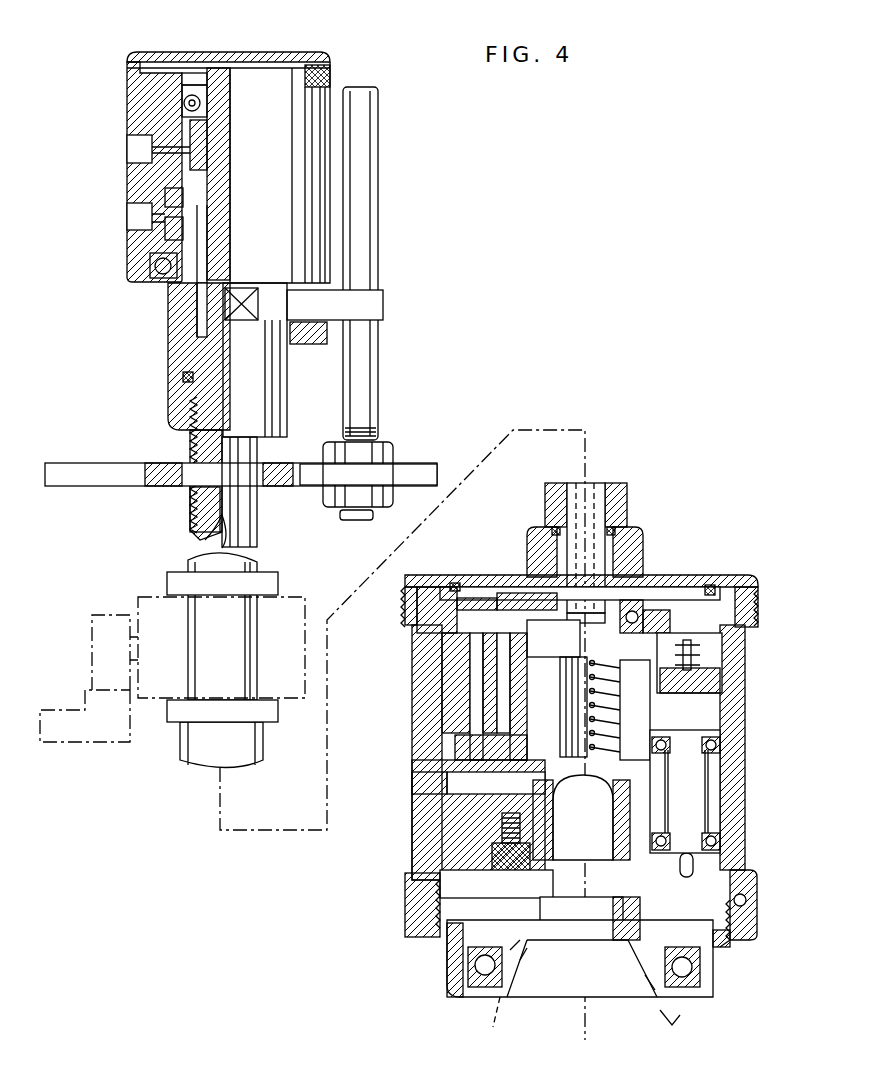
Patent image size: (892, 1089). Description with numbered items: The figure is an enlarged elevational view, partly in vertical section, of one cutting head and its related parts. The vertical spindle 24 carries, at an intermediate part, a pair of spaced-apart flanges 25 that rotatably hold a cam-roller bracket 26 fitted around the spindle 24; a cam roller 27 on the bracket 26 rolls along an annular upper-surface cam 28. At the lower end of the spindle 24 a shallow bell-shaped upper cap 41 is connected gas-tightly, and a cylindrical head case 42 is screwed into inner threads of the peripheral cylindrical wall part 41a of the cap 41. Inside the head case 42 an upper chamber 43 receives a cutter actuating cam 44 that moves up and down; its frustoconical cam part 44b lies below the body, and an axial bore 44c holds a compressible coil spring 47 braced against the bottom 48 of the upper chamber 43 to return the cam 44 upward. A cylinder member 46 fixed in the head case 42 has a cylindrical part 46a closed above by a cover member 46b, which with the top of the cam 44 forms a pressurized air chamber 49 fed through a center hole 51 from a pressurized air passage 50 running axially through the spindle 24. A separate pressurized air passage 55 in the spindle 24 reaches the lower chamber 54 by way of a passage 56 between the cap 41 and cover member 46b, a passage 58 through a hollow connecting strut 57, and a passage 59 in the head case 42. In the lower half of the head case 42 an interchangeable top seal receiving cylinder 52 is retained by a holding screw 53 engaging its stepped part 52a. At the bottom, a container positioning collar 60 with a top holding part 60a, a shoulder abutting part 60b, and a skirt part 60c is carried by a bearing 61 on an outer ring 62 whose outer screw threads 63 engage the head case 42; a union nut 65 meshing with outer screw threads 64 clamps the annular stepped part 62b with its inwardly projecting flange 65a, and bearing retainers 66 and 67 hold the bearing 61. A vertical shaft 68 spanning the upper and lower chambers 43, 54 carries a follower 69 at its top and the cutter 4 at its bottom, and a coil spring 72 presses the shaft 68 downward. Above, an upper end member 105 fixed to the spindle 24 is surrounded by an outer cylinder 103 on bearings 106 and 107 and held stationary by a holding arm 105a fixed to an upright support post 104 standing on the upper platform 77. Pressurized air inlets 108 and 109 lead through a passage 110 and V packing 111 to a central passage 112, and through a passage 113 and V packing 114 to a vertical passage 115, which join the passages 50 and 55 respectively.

The cutter 4 is at (585, 900).
The vertical spindle 24 is at (257, 505).
The flanges 25 is at (278, 580).
The cam-roller bracket 26 is at (312, 615).
The cam roller 27 is at (92, 655).
The annular upper-surface cam 28 is at (90, 690).
The upper cap 41 is at (730, 575).
The peripheral cylindrical wall part 41a is at (760, 600).
The head case 42 is at (745, 775).
The upper chamber 43 is at (650, 790).
The cutter actuating cam 44 is at (648, 620).
The cam part 44b is at (500, 745).
The bore 44c is at (590, 645).
The cylinder member 46 is at (705, 585).
The cylindrical part 46a is at (525, 670).
The cover member 46b is at (475, 580).
The compressible coil spring 47 is at (640, 760).
The bottom of the upper chamber 48 is at (578, 778).
The pressurized air chamber 49 is at (535, 597).
The pressurized air passage 50 is at (205, 520).
The center hole 51 is at (550, 545).
The top seal receiving cylinder 52 is at (545, 800).
The stepped part 52a is at (470, 880).
The holding screw 53 is at (500, 860).
The lower chamber 54 is at (440, 920).
The pressurized air passage 55 is at (192, 500).
The passage 56 is at (465, 575).
The hollow connecting strut 57 is at (452, 648).
The passage 58 is at (460, 640).
The passage 59 is at (460, 785).
The container positioning collar 60 is at (535, 985).
The top holding part 60a is at (537, 940).
The shoulder abutting part 60b is at (525, 960).
The skirt part 60c is at (645, 995).
The bearing 61 is at (480, 985).
The outer ring 62 is at (450, 978).
The annular stepped part 62b is at (725, 950).
The outer screw threads 63 is at (745, 915).
The outer screw threads 64 is at (757, 900).
The union nut 65 is at (757, 890).
The inwardly projecting flange 65a is at (745, 945).
The bearing retainer 66 is at (640, 950).
The bearing retainer 67 is at (700, 960).
The vertical shaft 68 is at (705, 815).
The follower 69 is at (700, 715).
The coil spring 72 is at (700, 655).
The upper platform 77 is at (420, 463).
The outer cylinder 103 is at (127, 100).
The upright support post 104 is at (378, 378).
The upper end member 105 is at (168, 372).
The holding arm 105a is at (383, 308).
The bearing 106 is at (192, 95).
The bearing 107 is at (158, 280).
The pressurized air inlet 108 is at (127, 150).
The pressurized air inlet 109 is at (127, 216).
The passage 110 is at (172, 150).
The V packing 111 is at (207, 125).
The central passage 112 is at (222, 226).
The passage 113 is at (165, 230).
The V packing 114 is at (183, 195).
The vertical passage 115 is at (200, 262).